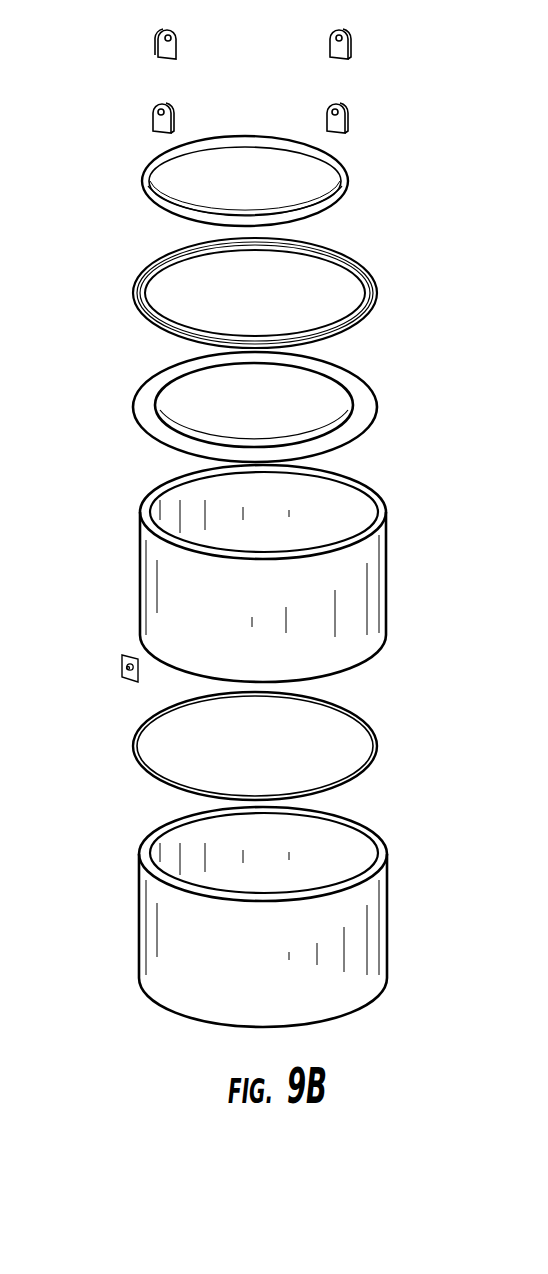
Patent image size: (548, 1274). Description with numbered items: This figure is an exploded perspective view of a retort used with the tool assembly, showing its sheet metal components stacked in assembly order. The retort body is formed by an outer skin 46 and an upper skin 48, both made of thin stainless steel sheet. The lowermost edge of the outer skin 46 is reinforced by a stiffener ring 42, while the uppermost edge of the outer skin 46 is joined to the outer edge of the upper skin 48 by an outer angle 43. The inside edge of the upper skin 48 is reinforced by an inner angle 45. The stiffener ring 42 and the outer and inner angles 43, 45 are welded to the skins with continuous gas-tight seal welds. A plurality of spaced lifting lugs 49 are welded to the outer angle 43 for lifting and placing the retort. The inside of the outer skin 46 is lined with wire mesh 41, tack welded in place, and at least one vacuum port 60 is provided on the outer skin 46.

The wire mesh 41 is at (140, 930).
The stiffener ring 42 is at (378, 738).
The outer angle 43 is at (133, 293).
The inner angle 45 is at (348, 180).
The outer skin 46 is at (140, 570).
The upper skin 48 is at (378, 392).
The lifting lugs 49 is at (350, 44).
The vacuum port 60 is at (125, 667).